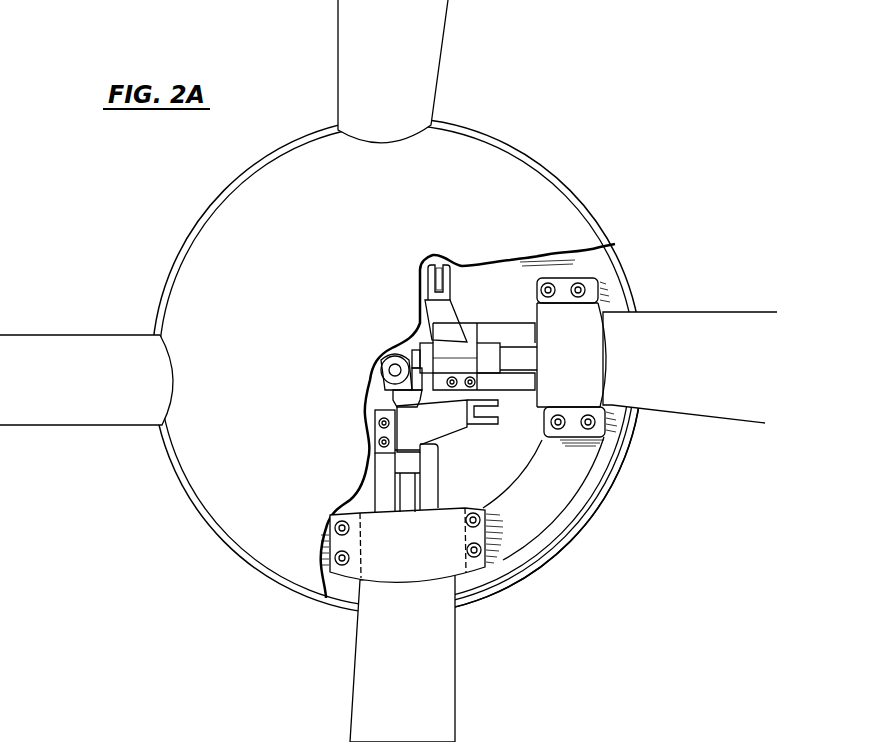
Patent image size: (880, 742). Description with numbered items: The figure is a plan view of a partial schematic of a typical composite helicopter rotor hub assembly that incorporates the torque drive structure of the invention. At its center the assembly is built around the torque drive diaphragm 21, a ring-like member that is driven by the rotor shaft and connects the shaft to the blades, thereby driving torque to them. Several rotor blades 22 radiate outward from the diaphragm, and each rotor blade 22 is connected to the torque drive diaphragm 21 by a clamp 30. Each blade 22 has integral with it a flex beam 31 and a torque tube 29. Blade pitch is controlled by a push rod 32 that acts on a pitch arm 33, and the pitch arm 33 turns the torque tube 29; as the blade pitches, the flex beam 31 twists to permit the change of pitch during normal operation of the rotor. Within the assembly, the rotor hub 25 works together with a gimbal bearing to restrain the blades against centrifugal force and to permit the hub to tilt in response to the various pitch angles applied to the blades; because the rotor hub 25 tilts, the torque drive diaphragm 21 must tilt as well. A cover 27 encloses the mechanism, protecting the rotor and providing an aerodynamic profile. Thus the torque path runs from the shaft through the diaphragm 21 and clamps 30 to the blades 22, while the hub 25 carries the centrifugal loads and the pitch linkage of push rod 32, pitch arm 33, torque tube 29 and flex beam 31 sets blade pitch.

The torque drive diaphragm 21 is at (598, 515).
The rotor blade 22 is at (404, 51).
The rotor hub 25 is at (422, 338).
The cover 27 is at (352, 302).
The torque tube 29 is at (532, 361).
The clamp 30 is at (600, 355).
The flex beam 31 is at (523, 384).
The push rod 32 is at (441, 263).
The pitch arm 33 is at (450, 308).